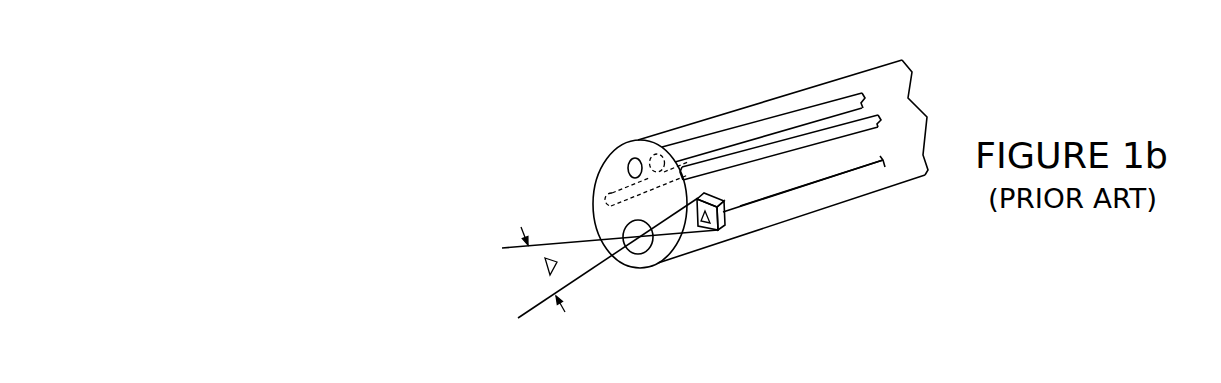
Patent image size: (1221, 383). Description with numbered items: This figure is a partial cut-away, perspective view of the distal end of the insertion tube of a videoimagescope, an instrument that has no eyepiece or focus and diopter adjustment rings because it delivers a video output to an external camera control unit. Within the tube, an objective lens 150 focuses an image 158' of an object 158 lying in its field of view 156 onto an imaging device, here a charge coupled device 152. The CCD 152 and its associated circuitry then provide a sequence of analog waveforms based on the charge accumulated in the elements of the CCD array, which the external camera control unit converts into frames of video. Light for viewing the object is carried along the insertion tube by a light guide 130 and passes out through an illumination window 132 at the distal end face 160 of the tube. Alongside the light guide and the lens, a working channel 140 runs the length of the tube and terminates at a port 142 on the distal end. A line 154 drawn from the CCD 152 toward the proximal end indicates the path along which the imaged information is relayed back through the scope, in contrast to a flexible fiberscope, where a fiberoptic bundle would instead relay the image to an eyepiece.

The working channel 140 is at (800, 145).
The light guide 130 is at (708, 145).
The illumination window 132 is at (627, 172).
The port 142 is at (603, 198).
The end face 160 is at (600, 220).
The object 158 is at (589, 269).
The field of view 156 is at (608, 270).
The objective lens 150 is at (643, 243).
The charge coupled device 152 is at (727, 230).
The reflected beam line 154 is at (793, 192).
The image 158' is at (806, 184).